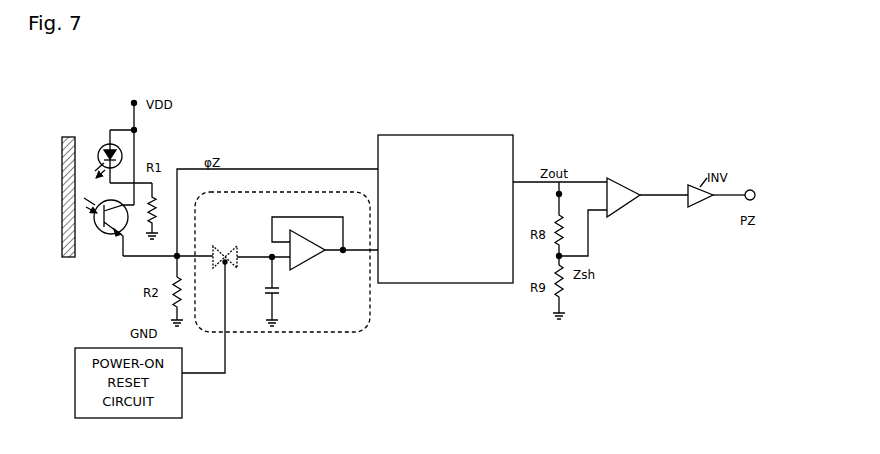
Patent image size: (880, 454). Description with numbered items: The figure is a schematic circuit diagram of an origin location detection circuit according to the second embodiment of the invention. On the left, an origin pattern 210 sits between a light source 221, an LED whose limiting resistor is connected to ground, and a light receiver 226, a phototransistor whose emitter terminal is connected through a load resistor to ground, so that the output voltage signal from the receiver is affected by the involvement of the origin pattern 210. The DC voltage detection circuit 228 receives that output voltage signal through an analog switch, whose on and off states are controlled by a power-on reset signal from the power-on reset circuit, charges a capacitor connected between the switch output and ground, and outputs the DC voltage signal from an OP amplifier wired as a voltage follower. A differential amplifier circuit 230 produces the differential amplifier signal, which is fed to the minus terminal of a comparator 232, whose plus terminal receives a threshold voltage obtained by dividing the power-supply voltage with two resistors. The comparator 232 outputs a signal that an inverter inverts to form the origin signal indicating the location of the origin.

The blade 210 is at (65, 136).
The light emitting diode 221 is at (101, 149).
The phototransistor 226 is at (99, 233).
The DC voltage detection circuit 228 is at (313, 332).
The differential amplifier circuit 230 is at (437, 135).
The comparator 232 is at (619, 186).